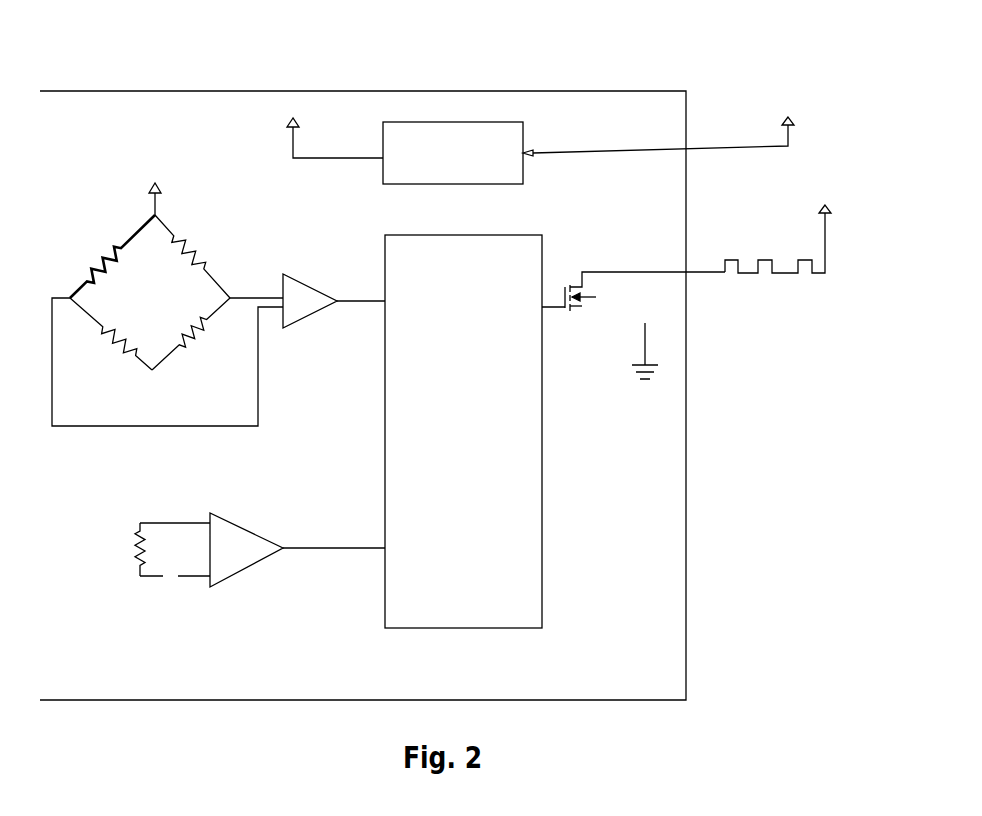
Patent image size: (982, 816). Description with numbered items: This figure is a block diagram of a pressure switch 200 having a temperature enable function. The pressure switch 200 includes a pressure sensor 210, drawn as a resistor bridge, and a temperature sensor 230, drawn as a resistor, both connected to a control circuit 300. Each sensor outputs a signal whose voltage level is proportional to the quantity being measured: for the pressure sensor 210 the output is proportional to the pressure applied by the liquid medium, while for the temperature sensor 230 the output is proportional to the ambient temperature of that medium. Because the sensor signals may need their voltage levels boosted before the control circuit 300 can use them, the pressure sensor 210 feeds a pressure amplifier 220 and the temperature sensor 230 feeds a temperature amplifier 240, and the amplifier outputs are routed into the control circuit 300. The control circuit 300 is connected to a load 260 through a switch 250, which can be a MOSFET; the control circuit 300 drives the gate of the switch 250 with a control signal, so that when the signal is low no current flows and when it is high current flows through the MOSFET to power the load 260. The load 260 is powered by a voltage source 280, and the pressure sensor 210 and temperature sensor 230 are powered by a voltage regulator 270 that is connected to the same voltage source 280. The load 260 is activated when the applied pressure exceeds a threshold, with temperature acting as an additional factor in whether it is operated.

The pressure switch 200 is at (380, 110).
The pressure sensor 210 is at (140, 222).
The pressure amplifier 220 is at (316, 282).
The temperature sensor 230 is at (137, 533).
The temperature amplifier 240 is at (225, 582).
The switch 250 is at (561, 292).
The load 260 is at (748, 275).
The voltage regulator 270 is at (460, 184).
The voltage source 280 is at (800, 120).
The control circuit 300 is at (508, 630).